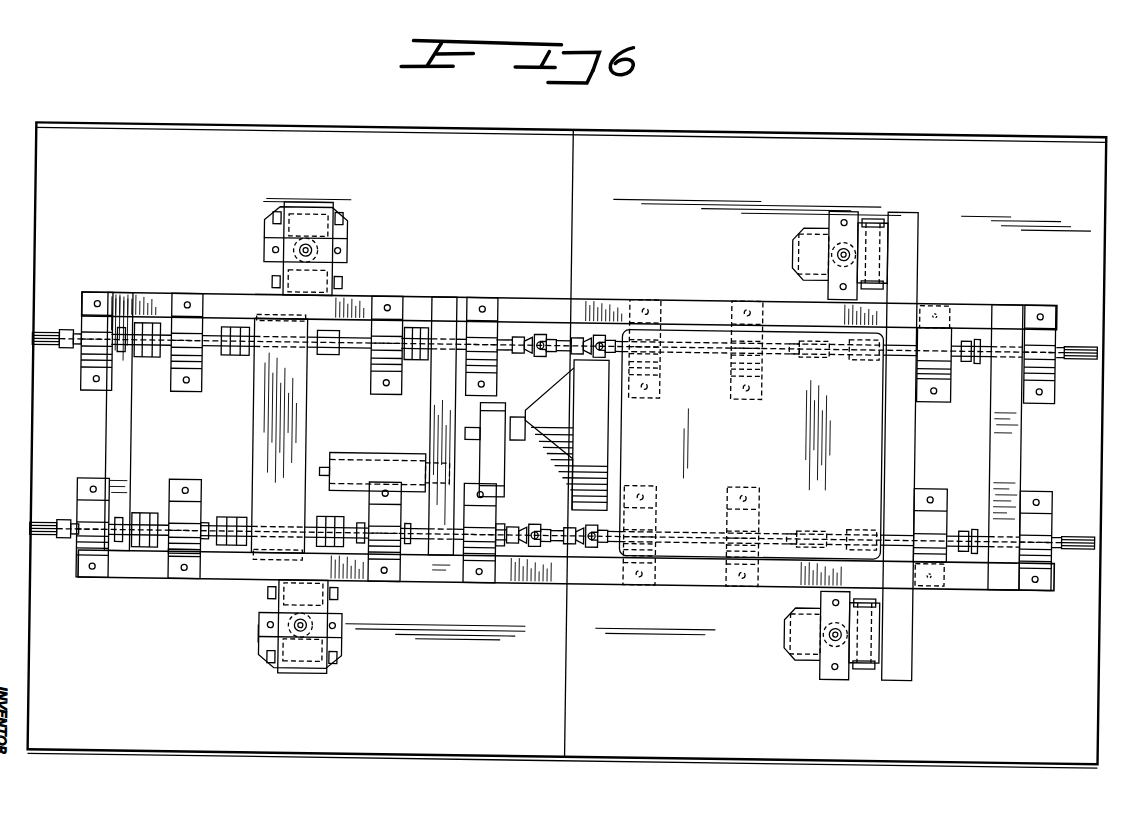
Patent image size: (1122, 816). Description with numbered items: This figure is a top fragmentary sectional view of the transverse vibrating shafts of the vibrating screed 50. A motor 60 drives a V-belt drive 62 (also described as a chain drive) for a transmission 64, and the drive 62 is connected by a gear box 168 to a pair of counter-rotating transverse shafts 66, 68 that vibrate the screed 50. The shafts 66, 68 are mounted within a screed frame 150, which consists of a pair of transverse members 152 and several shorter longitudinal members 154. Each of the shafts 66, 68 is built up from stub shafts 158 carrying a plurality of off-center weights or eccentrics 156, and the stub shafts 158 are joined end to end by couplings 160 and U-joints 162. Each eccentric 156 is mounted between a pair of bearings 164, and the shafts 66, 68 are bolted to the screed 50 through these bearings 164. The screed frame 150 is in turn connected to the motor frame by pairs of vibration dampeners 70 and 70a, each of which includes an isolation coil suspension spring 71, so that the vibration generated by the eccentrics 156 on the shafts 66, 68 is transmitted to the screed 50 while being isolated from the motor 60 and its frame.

The vibrating screed 50 is at (1022, 700).
The motor 60 is at (868, 433).
The V-belt drive 62 is at (490, 411).
The transmission 64 is at (392, 431).
The transverse shaft 66 is at (1084, 538).
The transverse shaft 68 is at (1090, 326).
The vibration dampener 70 is at (862, 234).
The vibration dampener 70a is at (346, 221).
The isolation coil suspension spring 71 is at (262, 636).
The screed frame 150 is at (570, 283).
The transverse member 152 is at (157, 302).
The longitudinal member 154 is at (113, 439).
The eccentric 156 is at (149, 542).
The stub shaft 158 is at (213, 542).
The coupling 160 is at (337, 325).
The U-joint 162 is at (610, 533).
The bearing 164 is at (186, 542).
The gear box 168 is at (268, 421).